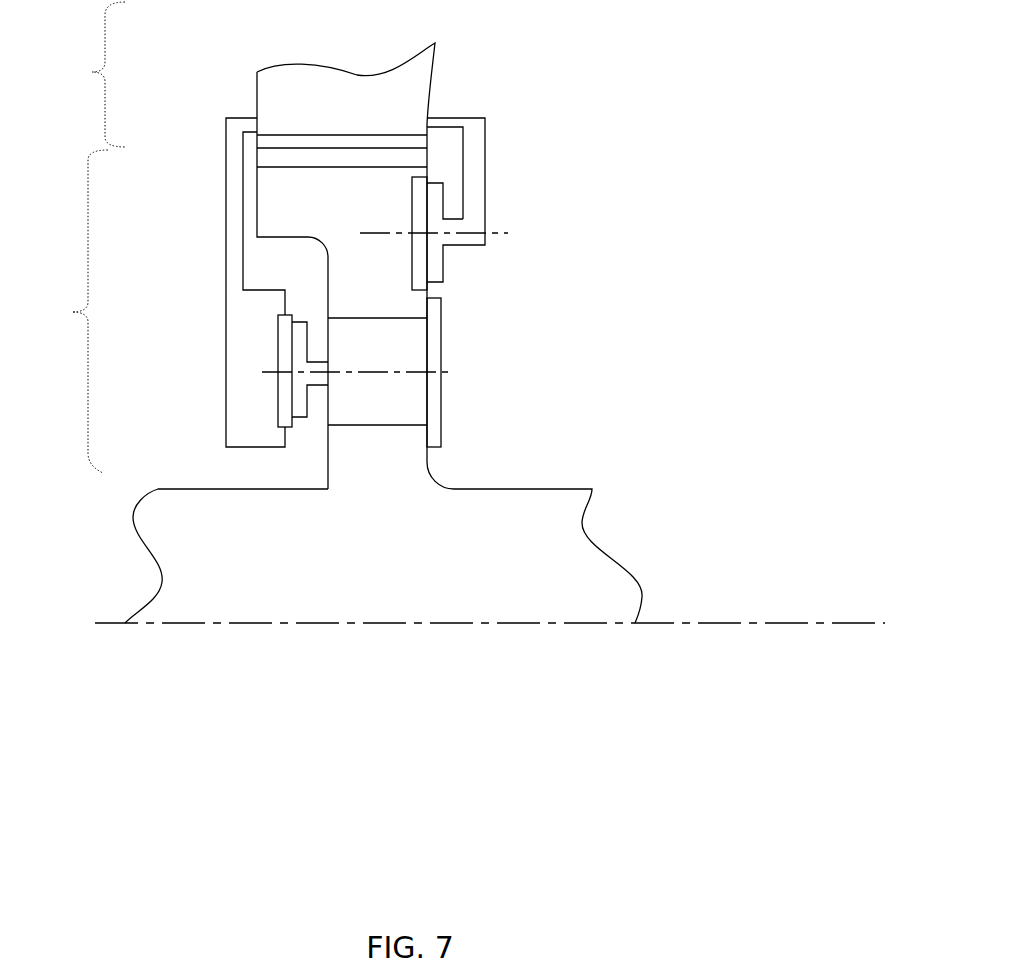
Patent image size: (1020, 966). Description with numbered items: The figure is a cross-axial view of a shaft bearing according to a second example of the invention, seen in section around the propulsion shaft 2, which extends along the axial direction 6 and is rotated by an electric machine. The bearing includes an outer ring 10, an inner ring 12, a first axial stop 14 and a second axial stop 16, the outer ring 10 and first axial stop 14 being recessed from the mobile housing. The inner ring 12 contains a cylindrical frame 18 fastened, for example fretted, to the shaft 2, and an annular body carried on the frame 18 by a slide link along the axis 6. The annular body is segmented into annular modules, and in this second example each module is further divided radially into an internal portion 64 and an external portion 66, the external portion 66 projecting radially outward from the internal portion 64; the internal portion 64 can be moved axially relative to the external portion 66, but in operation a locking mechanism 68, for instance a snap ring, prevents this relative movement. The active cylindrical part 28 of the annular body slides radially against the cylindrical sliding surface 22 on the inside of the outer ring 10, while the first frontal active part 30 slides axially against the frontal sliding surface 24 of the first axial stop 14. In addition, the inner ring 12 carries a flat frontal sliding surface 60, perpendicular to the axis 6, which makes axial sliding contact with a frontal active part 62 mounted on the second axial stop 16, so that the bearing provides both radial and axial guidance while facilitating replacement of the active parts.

The propulsion shaft 2 is at (576, 478).
The axial direction 6 is at (792, 620).
The outer ring 10 is at (89, 74).
The inner ring 12 is at (72, 311).
The first axial stop 14 is at (247, 350).
The second axial stop 16 is at (475, 158).
The cylindrical frame 18 is at (398, 455).
The cylindrical sliding surface 22 is at (322, 143).
The frontal sliding surface 24 is at (283, 390).
The active cylindrical part 28 is at (387, 146).
The first frontal active part 30 is at (285, 318).
The frontal sliding surface 60 is at (427, 257).
The frontal active part 62 is at (442, 197).
The internal portion 64 is at (400, 333).
The external portion 66 is at (312, 186).
The locking mechanism 68 is at (432, 403).